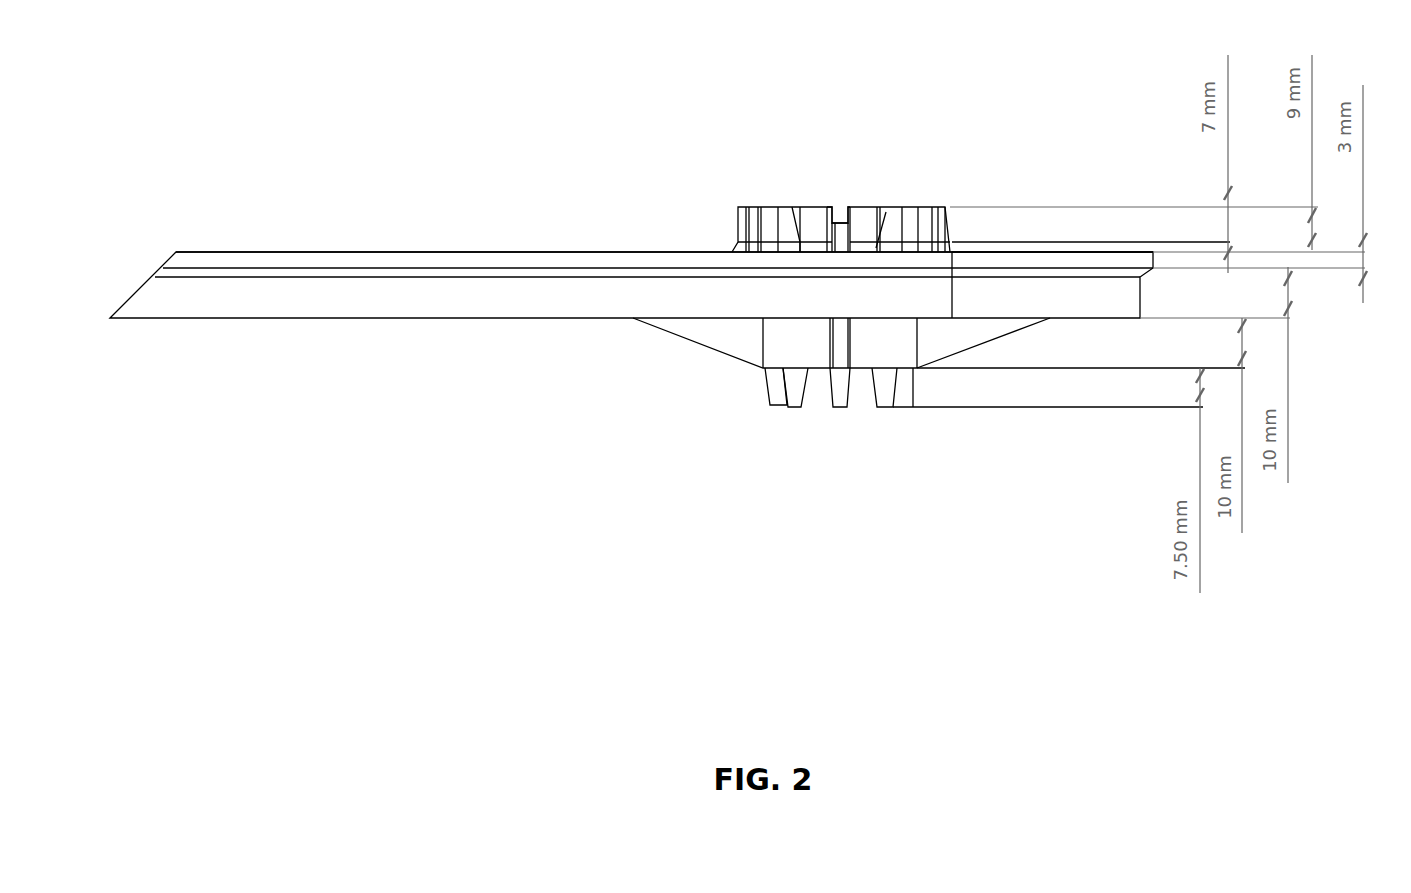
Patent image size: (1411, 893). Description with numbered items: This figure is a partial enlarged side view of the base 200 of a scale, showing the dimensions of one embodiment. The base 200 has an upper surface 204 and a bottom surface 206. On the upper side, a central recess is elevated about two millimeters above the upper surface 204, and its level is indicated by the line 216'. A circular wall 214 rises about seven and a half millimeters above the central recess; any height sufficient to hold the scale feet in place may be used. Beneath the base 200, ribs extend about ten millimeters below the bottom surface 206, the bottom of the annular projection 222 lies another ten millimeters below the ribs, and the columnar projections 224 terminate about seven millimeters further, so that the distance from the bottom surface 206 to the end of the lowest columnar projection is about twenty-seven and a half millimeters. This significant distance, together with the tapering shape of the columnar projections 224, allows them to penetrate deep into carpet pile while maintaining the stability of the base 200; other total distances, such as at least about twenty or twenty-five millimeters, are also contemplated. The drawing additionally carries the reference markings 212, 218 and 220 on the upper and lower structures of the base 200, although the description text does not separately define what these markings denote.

The base 200 is at (246, 127).
The upper surface 204 is at (281, 250).
The bottom surface 206 is at (265, 269).
The upper connector housing 212 is at (725, 198).
The circular wall 214 is at (940, 218).
The line depicting level of central recess 216' is at (1091, 205).
The housing notch 218 is at (839, 215).
The lower connector housing 220 is at (895, 432).
The annular projection 222 is at (765, 368).
The columnar projections 224 is at (795, 405).